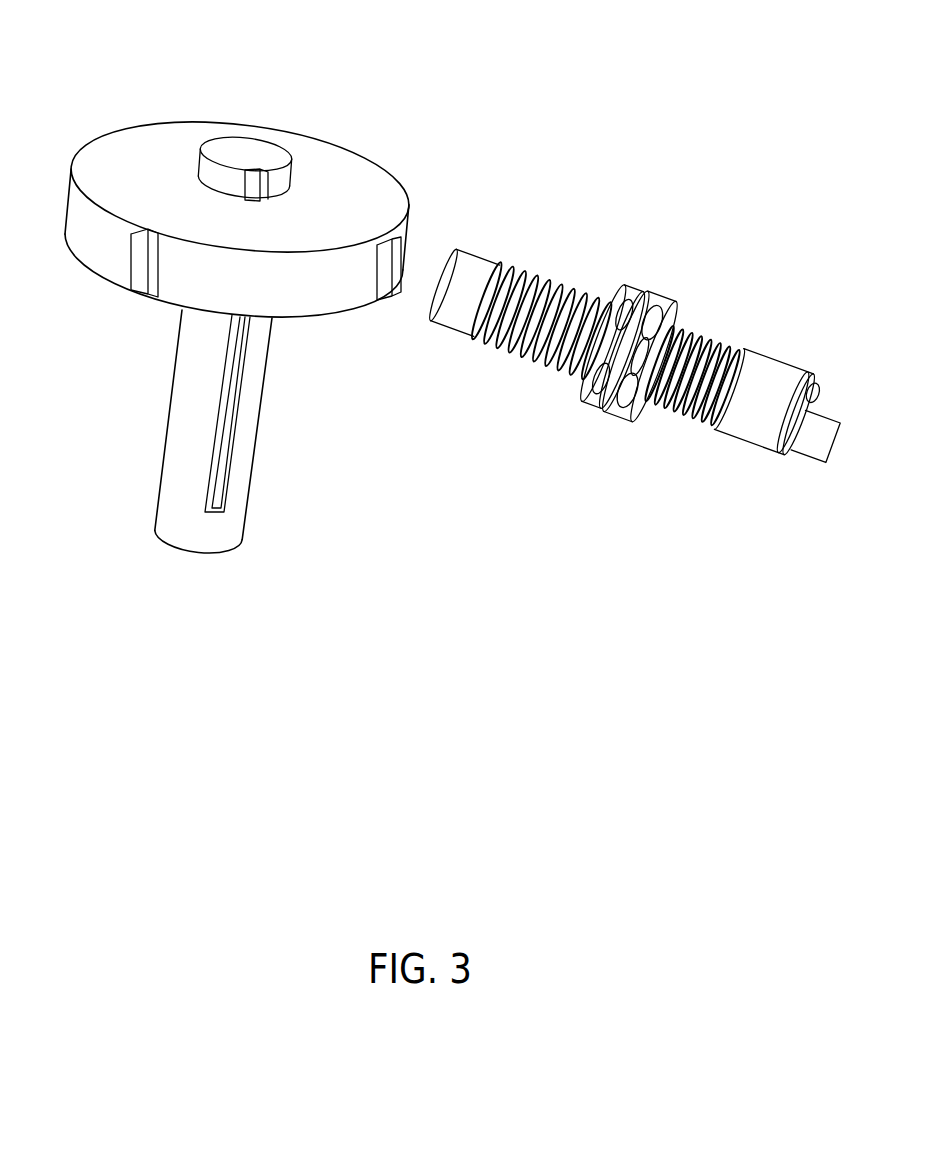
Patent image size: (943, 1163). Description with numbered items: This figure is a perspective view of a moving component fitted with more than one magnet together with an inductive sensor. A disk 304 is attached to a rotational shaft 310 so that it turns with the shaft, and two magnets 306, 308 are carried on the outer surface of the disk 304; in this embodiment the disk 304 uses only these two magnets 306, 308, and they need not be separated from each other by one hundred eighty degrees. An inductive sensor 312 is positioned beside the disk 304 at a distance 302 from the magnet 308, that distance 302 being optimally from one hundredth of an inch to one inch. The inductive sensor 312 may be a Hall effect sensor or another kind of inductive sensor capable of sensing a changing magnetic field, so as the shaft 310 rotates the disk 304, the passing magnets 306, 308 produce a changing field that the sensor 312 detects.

The distance 302 is at (622, 362).
The disk 304 is at (143, 148).
The magnet 306 is at (143, 261).
The magnet 308 is at (402, 274).
The rotational shaft 310 is at (187, 443).
The inductive sensor 312 is at (540, 362).